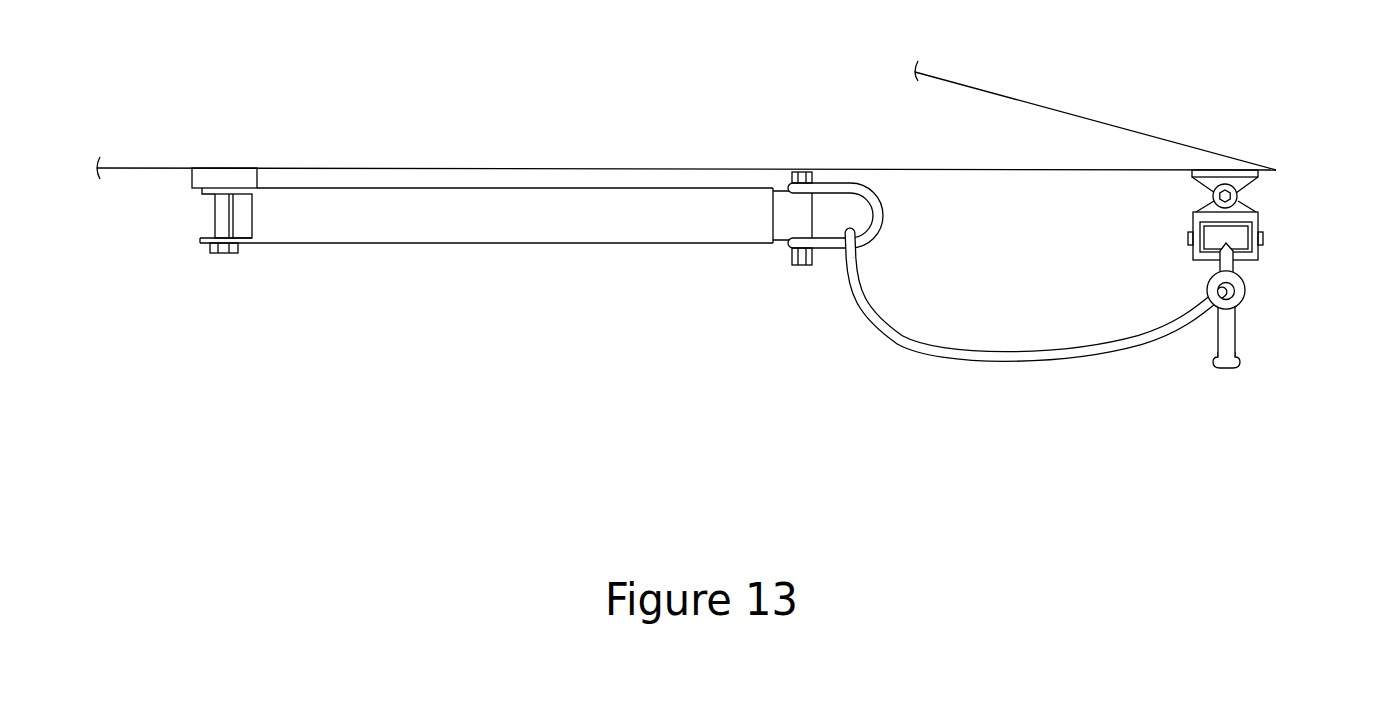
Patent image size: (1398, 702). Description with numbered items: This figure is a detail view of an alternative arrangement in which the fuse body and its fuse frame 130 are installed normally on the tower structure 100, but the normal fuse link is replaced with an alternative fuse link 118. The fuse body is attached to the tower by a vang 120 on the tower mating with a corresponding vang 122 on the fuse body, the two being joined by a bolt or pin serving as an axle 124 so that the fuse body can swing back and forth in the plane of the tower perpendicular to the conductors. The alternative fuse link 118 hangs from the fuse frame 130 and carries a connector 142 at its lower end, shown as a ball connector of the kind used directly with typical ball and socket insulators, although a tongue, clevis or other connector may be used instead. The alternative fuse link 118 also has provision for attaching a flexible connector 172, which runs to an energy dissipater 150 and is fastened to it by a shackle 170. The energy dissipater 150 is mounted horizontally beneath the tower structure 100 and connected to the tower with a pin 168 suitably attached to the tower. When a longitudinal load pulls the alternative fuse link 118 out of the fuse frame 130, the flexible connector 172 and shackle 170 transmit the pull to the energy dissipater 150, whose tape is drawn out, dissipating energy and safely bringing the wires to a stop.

The support structure 100 is at (439, 168).
The alternative fuse link 118 is at (1230, 335).
The vang 120 is at (1260, 182).
The vang 122 is at (1279, 219).
The axle 124 is at (1213, 197).
The fuse frame 130 is at (1258, 262).
The connector 142 is at (1218, 377).
The energy dissipater 150 is at (647, 237).
The pin 168 is at (171, 230).
The shackle 170 is at (890, 213).
The flexible connector 172 is at (987, 362).